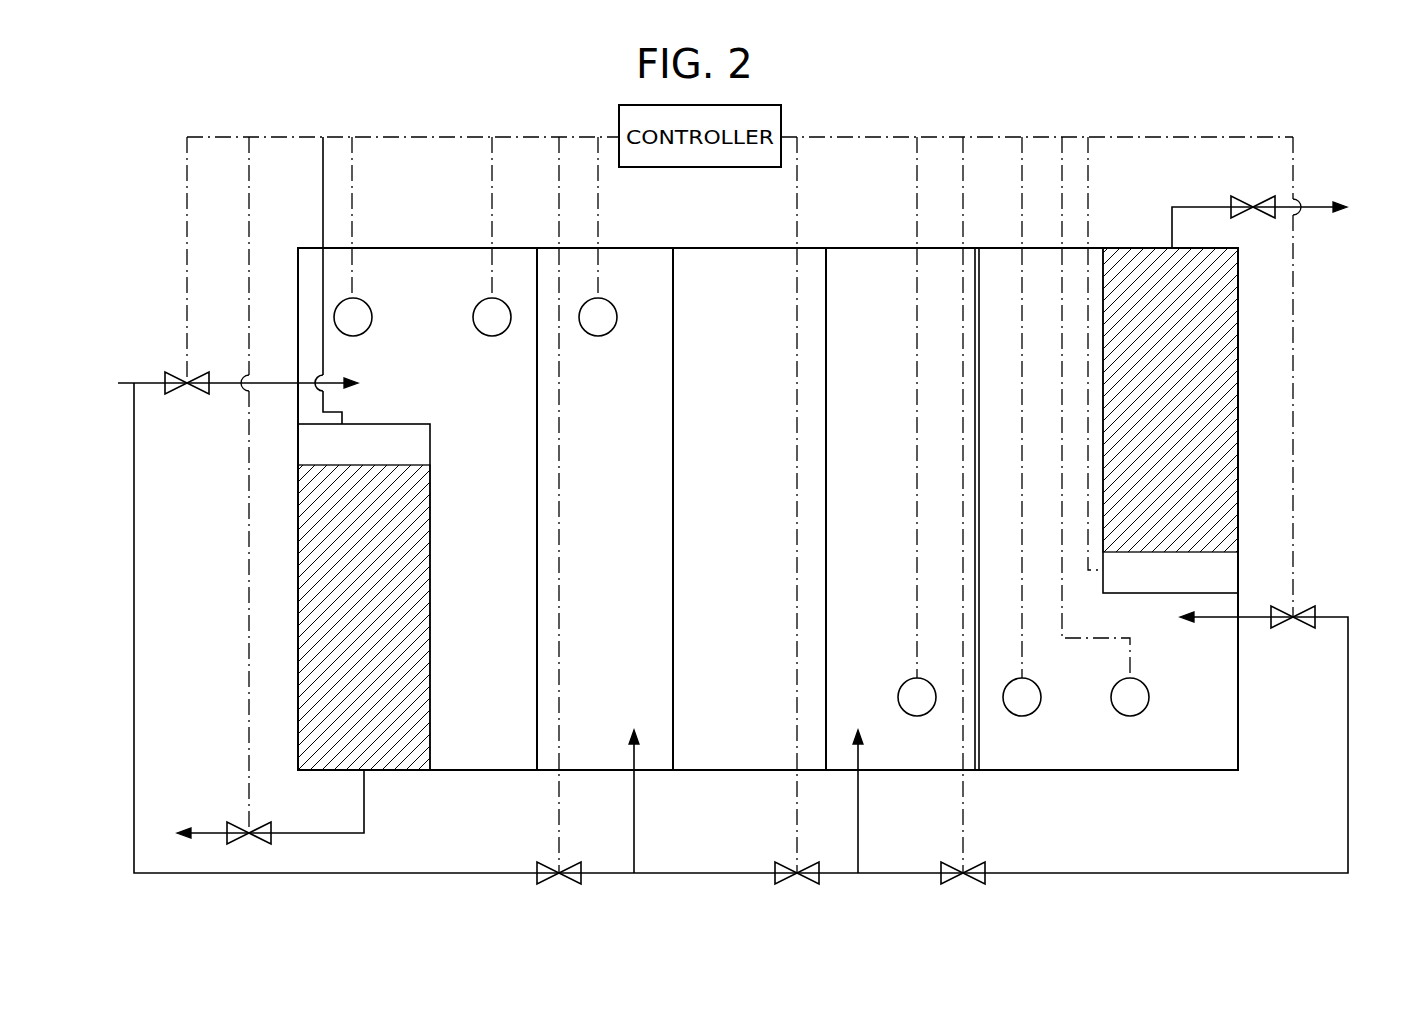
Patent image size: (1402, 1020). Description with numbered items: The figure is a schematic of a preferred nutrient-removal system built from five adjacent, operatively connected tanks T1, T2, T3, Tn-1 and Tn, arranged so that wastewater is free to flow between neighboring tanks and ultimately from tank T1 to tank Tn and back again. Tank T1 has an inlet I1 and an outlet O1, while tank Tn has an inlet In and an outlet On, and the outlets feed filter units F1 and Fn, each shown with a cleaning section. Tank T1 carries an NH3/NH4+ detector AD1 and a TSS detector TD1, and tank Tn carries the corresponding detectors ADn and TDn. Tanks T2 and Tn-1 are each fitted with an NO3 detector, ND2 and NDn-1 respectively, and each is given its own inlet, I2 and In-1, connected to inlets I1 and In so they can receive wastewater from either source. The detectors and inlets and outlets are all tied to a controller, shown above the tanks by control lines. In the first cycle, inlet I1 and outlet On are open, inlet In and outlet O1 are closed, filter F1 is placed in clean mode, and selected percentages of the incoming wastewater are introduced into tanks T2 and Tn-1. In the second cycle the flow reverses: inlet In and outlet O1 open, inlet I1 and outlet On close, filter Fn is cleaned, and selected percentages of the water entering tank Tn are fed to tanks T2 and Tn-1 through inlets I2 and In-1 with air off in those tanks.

The filter F1 is at (298, 566).
The filter Fn is at (1240, 390).
The TSS detector TD1 is at (375, 307).
The NH3/NH4+ detector AD1 is at (505, 337).
The NO3 detector ND2 is at (600, 337).
The NO3 detector NDn-1 is at (902, 690).
The NH3/NH4+ detector ADn is at (1021, 718).
The TSS detector TDn is at (1152, 707).
The tank T1 is at (417, 509).
The tank T2 is at (605, 509).
The tank T3 is at (749, 509).
The tank Tn-1 is at (900, 509).
The tank Tn is at (1108, 509).
The inlet I1 is at (223, 384).
The inlet I2 is at (646, 801).
The inlet In-1 is at (880, 801).
The inlet In is at (1277, 618).
The outlet O1 is at (254, 808).
The outlet On is at (1278, 222).